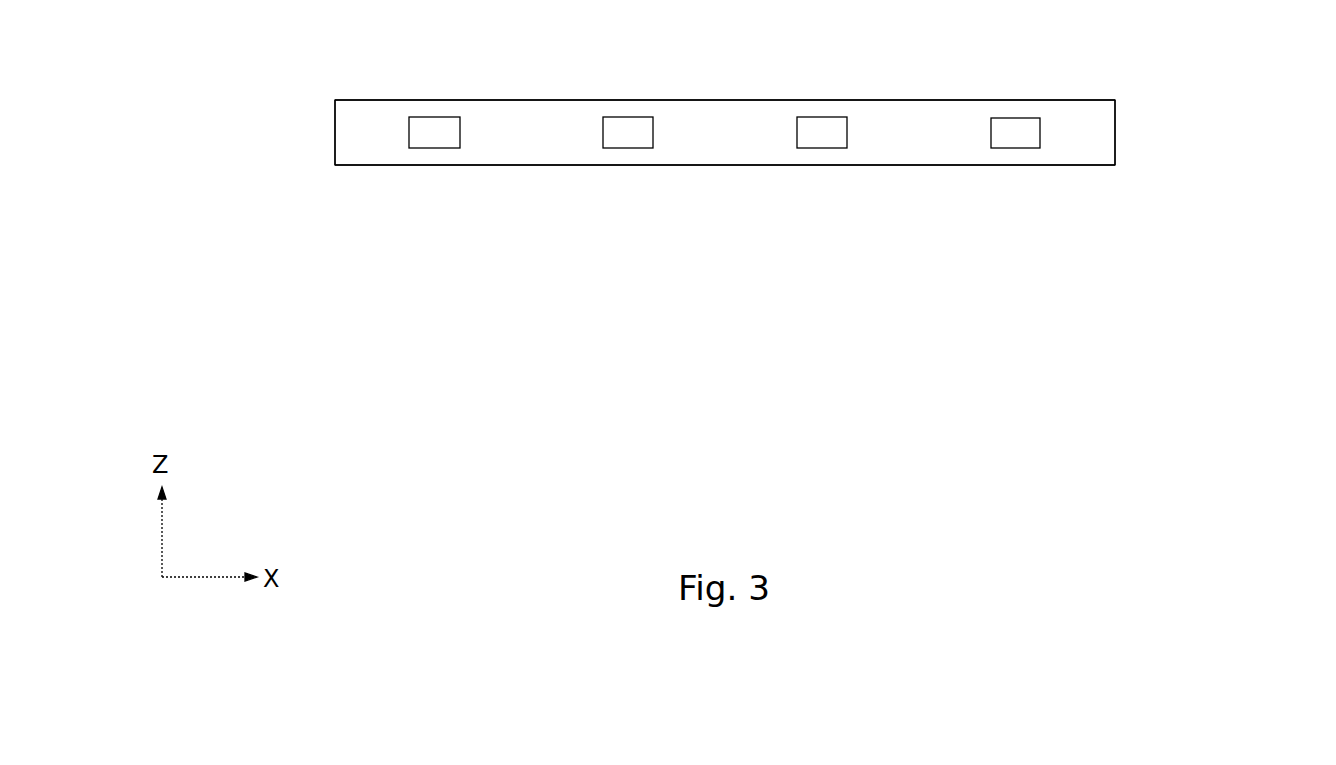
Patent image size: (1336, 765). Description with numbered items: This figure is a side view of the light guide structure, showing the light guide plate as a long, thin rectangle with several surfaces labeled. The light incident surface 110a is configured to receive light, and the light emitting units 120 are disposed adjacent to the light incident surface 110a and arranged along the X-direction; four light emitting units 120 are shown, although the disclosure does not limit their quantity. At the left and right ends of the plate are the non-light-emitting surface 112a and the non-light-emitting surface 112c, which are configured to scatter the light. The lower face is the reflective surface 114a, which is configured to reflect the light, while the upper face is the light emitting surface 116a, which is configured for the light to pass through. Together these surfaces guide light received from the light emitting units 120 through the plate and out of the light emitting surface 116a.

The light incident surface 110a is at (522, 145).
The non-light-emitting surface 112a is at (335, 135).
The non-light-emitting surface 112c is at (1115, 132).
The reflective surface 114a is at (725, 165).
The light emitting surface 116a is at (725, 100).
The light emitting units 120 is at (433, 135).